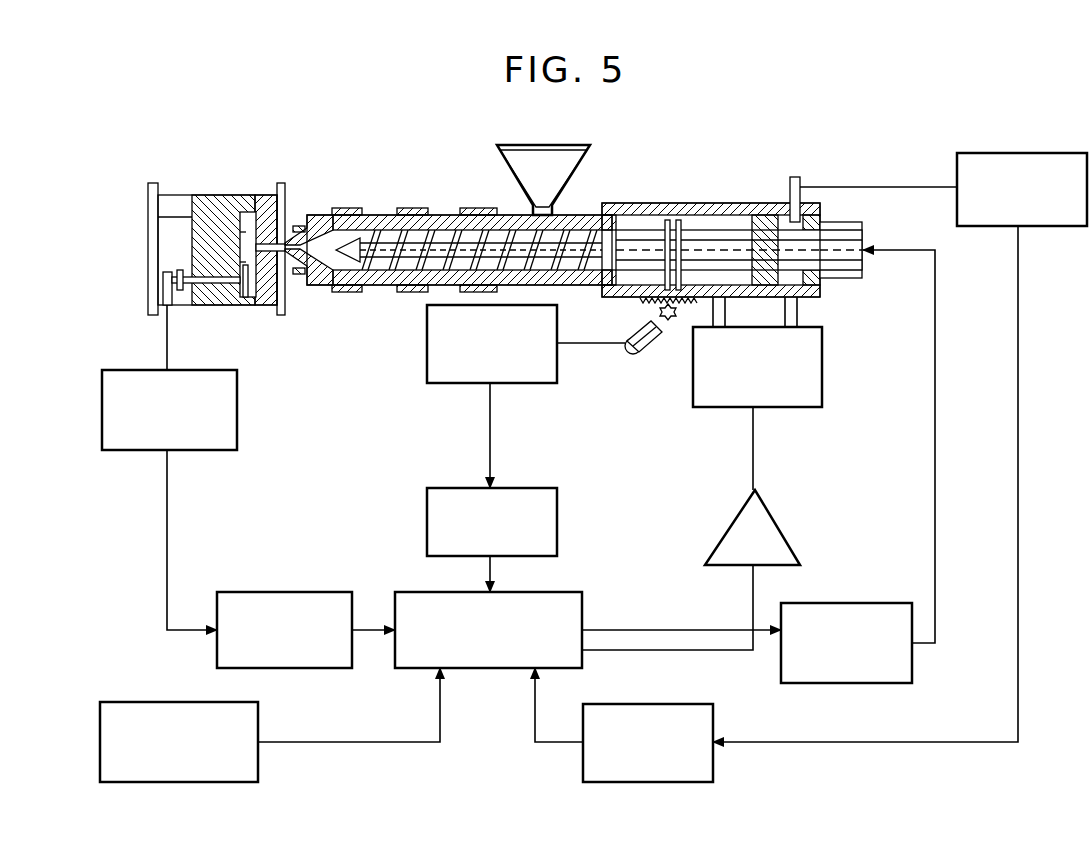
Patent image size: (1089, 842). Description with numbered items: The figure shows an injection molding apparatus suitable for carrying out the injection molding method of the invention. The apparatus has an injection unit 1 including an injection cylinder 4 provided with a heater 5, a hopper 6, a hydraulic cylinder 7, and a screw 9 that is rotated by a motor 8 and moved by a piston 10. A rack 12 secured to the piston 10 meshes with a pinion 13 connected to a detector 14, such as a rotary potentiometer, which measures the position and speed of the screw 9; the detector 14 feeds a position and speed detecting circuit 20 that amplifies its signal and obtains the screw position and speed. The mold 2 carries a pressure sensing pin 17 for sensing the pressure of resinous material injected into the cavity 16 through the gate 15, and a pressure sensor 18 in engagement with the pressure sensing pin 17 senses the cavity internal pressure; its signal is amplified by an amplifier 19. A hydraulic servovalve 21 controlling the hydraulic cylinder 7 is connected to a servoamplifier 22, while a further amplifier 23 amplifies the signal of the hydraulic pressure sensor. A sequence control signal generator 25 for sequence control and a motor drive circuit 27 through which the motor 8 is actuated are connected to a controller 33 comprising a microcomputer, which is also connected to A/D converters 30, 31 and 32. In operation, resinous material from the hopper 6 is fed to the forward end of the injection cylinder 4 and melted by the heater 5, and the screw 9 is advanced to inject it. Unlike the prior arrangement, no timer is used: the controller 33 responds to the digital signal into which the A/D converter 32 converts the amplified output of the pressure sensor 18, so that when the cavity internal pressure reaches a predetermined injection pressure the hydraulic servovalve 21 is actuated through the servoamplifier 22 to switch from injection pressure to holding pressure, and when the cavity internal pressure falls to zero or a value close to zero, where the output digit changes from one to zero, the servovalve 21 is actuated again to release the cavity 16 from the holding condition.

The injection unit 1 is at (401, 195).
The mold 2 is at (246, 249).
The injection cylinder 4 is at (320, 212).
The heater 5 is at (478, 208).
The hopper 6 is at (543, 148).
The hydraulic cylinder 7 is at (765, 222).
The motor 8 is at (856, 266).
The screw 9 is at (379, 235).
The piston 10 is at (738, 233).
The rack 12 is at (635, 303).
The pinion 13 is at (654, 326).
The detector 14 is at (637, 353).
The gate 15 is at (288, 290).
The cavity 16 is at (247, 283).
The pressure sensing pin 17 is at (210, 283).
The pressure sensor 18 is at (163, 284).
The amplifier 19 is at (122, 370).
The position and speed detecting circuit 20 is at (427, 324).
The hydraulic servovalve 21 is at (823, 360).
The servoamplifier 22 is at (800, 537).
The amplifier 23 is at (1024, 153).
The sequence control signal generator 25 is at (155, 702).
The motor drive circuit 27 is at (853, 603).
The A/D converter 30 is at (700, 698).
The A/D converter 31 is at (530, 488).
The A/D converter 32 is at (304, 592).
The controller 33 is at (578, 592).